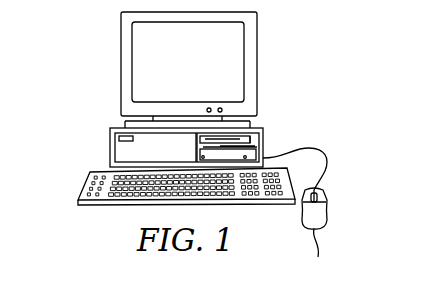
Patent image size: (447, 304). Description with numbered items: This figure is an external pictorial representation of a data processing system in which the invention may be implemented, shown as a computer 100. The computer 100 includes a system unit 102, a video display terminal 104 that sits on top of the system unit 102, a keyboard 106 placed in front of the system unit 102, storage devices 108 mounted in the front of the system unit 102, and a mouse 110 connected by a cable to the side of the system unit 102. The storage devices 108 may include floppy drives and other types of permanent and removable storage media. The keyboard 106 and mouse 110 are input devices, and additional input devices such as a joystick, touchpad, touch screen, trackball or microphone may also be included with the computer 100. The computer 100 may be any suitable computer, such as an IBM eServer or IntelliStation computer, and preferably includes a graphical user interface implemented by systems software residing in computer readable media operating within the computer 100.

The computer 100 is at (58, 48).
The system unit 102 is at (110, 145).
The video display terminal 104 is at (258, 67).
The keyboard 106 is at (103, 204).
The storage devices 108 is at (262, 143).
The mouse 110 is at (298, 213).